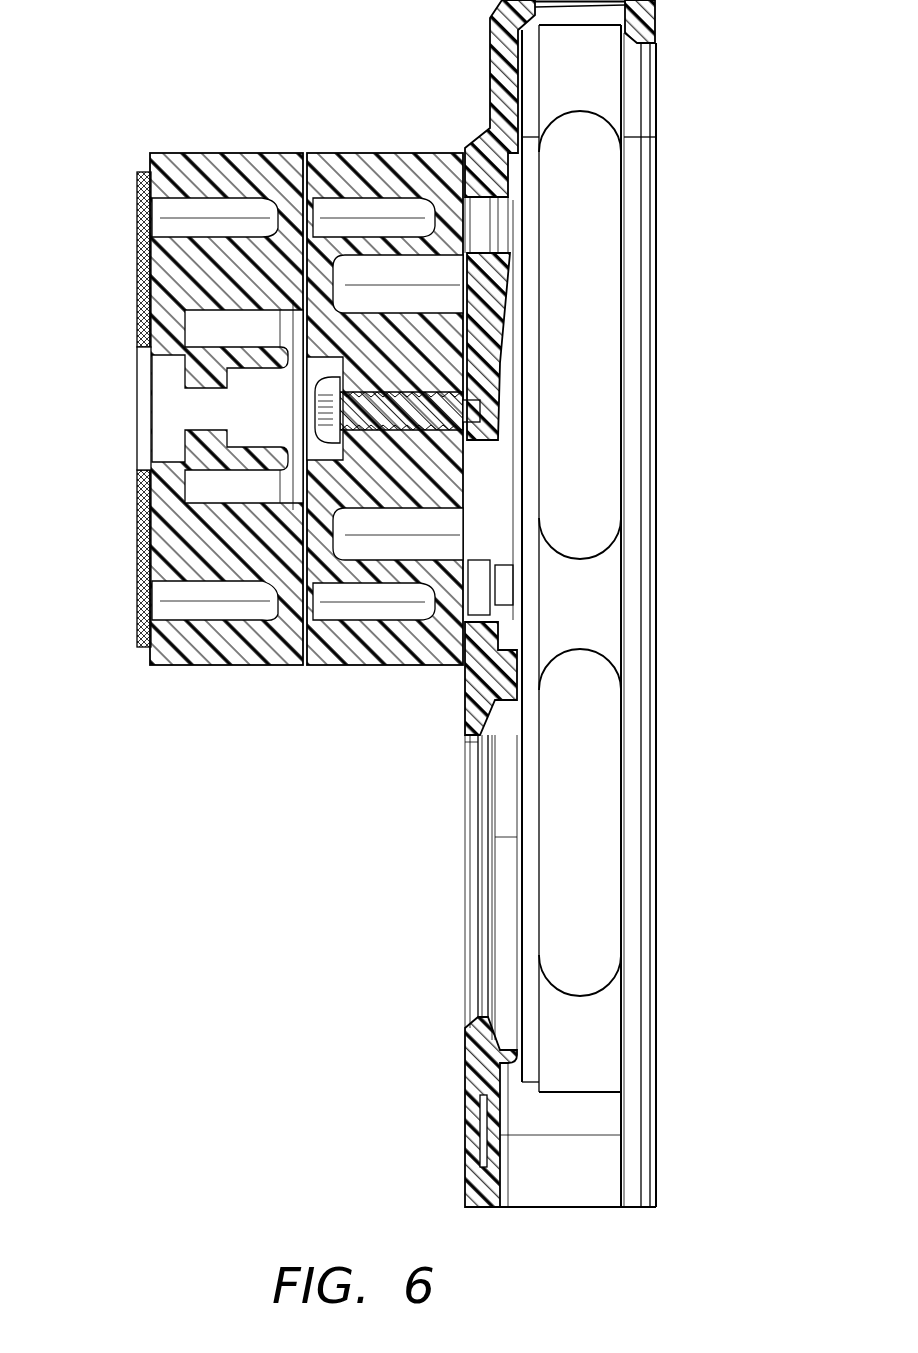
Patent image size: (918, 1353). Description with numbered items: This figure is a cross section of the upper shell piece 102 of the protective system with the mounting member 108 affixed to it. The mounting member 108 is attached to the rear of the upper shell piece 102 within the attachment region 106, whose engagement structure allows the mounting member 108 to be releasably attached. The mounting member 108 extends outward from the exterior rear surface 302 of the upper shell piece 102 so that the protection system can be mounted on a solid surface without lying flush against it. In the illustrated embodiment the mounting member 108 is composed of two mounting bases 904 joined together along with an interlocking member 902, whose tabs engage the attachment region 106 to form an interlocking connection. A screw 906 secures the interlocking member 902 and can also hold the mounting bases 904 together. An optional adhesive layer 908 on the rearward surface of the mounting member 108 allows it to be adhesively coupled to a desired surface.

The upper shell piece 102 is at (642, 90).
The attachment region 106 is at (455, 686).
The mounting member 108 is at (463, 134).
The exterior rear surface 302 is at (488, 66).
The interlocking member 902 is at (480, 483).
The mounting base 904 is at (223, 652).
The screw 906 is at (442, 410).
The adhesive layer 908 is at (147, 550).